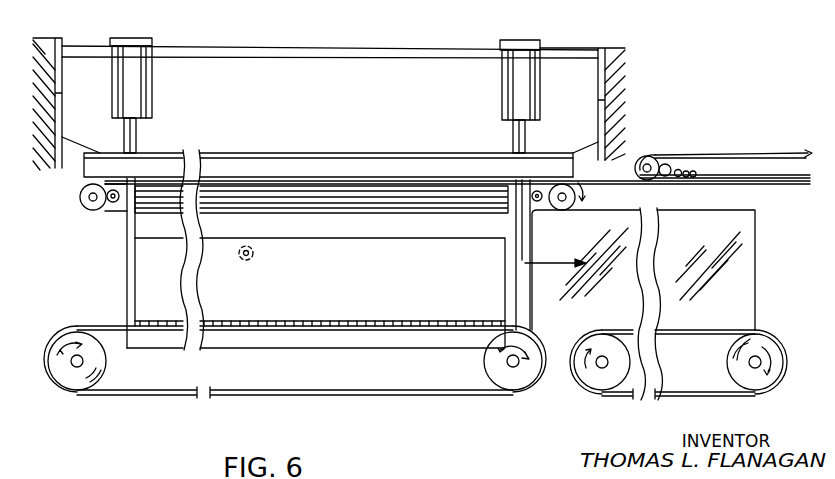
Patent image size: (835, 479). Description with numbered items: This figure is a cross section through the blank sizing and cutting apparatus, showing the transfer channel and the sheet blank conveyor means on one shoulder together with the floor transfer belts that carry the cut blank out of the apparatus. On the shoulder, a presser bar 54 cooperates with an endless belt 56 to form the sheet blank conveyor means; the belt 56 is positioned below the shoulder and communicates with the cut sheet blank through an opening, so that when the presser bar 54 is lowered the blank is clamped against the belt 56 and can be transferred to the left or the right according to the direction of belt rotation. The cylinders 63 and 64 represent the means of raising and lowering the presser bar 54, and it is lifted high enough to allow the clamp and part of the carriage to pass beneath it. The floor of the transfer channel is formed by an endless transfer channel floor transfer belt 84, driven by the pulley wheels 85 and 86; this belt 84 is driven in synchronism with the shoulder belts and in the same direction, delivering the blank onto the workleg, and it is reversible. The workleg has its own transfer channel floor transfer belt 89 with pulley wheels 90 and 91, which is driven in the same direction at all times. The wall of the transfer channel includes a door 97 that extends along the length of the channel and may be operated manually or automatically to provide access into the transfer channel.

The presser bar 54 is at (268, 220).
The endless belt 56 is at (97, 211).
The cylinder 63 is at (524, 40).
The cylinder 64 is at (125, 38).
The transfer channel floor transfer belt 84 is at (148, 395).
The pulley wheel 85 is at (68, 383).
The pulley wheel 86 is at (510, 385).
The belt 89 is at (590, 393).
The pulley wheel 90 is at (633, 358).
The pulley wheel 91 is at (787, 362).
The door 97 is at (365, 240).